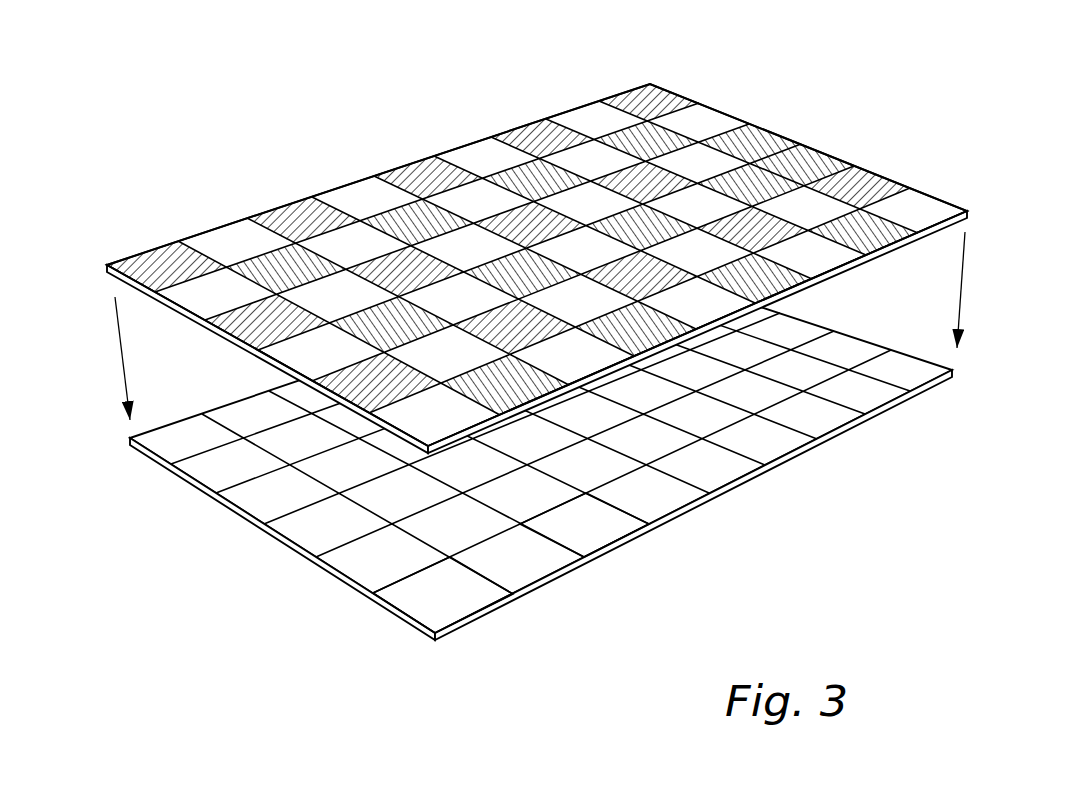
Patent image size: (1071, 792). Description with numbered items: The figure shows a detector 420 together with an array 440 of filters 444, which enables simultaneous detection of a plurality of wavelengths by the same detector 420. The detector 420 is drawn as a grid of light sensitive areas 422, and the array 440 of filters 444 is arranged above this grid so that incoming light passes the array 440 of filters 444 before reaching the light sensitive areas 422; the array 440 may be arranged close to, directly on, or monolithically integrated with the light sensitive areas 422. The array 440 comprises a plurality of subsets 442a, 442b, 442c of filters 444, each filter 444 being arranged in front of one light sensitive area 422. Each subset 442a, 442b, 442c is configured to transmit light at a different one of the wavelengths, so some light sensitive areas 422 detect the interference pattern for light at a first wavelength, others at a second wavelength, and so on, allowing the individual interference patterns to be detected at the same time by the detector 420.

The detector 420 is at (876, 440).
The light sensitive area 422 is at (597, 533).
The array of filters 440 is at (510, 233).
The first subset of filters 442a is at (402, 170).
The second subset of filters 442b is at (578, 122).
The third subset of filters 442c is at (732, 177).
The filter 444 is at (917, 210).